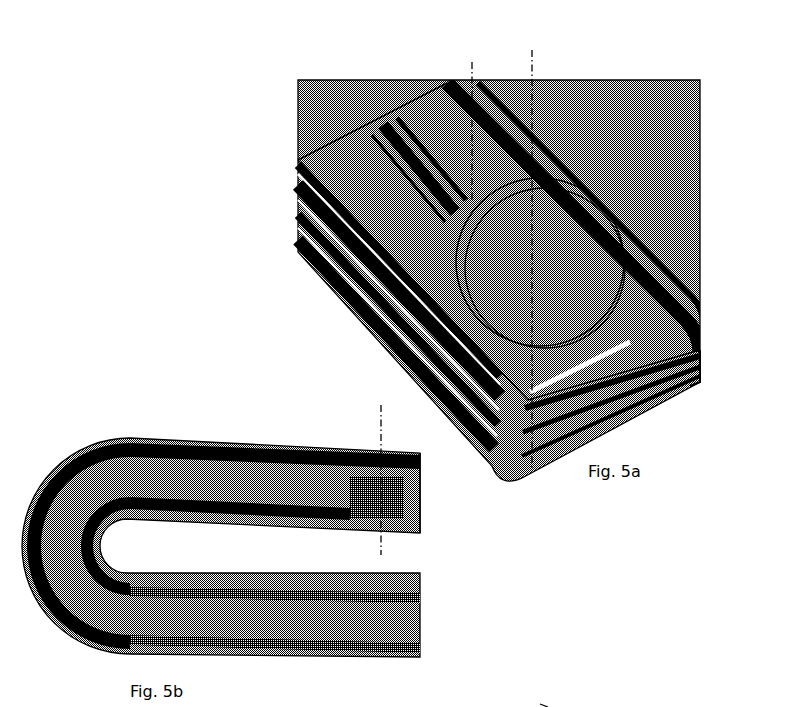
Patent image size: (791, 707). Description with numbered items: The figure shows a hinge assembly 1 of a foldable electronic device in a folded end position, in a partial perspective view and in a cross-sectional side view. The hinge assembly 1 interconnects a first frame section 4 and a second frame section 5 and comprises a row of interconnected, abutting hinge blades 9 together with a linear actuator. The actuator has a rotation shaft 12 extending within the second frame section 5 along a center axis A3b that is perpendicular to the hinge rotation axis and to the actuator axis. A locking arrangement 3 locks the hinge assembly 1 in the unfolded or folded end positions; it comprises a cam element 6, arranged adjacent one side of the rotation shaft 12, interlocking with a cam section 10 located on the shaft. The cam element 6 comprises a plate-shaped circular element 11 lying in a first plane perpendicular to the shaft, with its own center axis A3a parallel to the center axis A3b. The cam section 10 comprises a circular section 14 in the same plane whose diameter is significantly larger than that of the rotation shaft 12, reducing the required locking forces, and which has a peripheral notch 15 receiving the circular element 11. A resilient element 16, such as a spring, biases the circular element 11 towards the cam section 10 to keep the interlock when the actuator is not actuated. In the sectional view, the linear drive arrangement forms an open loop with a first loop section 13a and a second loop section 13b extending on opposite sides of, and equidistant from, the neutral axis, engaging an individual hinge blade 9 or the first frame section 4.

In FIG. 5a, the hinge assembly 1 is at (236, 174).
In FIG. 5b, the hinge assembly 1 is at (455, 560).
In FIG. 5a, the locking arrangement 3 is at (343, 290).
In FIG. 5a, the first frame section 4 is at (687, 233).
In FIG. 5b, the first frame section 4 is at (403, 613).
In FIG. 5a, the second frame section 5 is at (700, 355).
In FIG. 5b, the second frame section 5 is at (403, 463).
In FIG. 5a, the cam element 6 is at (408, 237).
In FIG. 5a, the hinge blade 9 is at (298, 243).
In FIG. 5b, the hinge blade 9 is at (545, 706).
In FIG. 5a, the cam section 10 is at (607, 283).
In FIG. 5a, the circular element 11 is at (500, 190).
In FIG. 5b, the rotation shaft 12 is at (389, 530).
In FIG. 5b, the first loop section 13a is at (212, 460).
In FIG. 5b, the second loop section 13b is at (182, 497).
In FIG. 5a, the circular section 14 is at (622, 242).
In FIG. 5a, the peripheral notch 15 is at (637, 413).
In FIG. 5a, the resilient element 16 is at (432, 215).
In FIG. 5a, the center axis of the cam element A3a is at (462, 190).
In FIG. 5a, the center axis of the rotation shaft A3b is at (533, 97).
In FIG. 5b, the center axis of the rotation shaft A3b is at (380, 435).